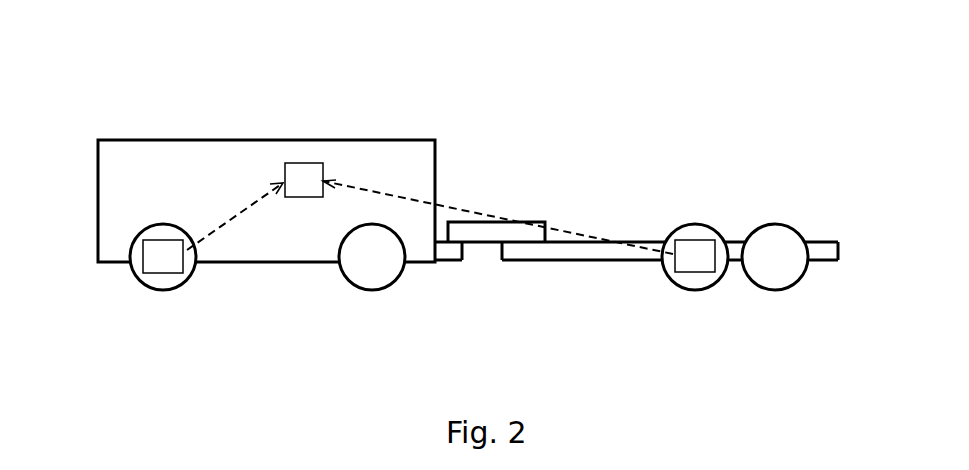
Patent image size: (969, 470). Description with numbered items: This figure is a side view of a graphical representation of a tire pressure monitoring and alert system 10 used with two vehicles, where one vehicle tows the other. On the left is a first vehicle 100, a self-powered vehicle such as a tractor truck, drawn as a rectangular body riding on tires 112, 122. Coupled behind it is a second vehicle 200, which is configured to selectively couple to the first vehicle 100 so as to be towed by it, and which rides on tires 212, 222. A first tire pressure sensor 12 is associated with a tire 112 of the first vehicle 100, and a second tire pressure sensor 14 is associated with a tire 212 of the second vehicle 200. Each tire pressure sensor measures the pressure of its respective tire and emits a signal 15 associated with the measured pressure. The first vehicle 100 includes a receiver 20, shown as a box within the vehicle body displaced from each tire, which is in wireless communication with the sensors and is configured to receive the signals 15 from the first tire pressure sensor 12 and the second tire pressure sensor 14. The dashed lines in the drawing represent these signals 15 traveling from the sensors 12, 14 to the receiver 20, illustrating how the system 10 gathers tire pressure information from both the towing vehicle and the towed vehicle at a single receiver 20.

The tire pressure monitoring and alert system 10 is at (176, 78).
The first vehicle 100 is at (295, 138).
The second vehicle 200 is at (752, 187).
The tire 112 is at (140, 282).
The tire 122 is at (347, 282).
The tire 212 is at (672, 280).
The tire 222 is at (752, 283).
The first tire pressure sensor 12 is at (163, 256).
The second tire pressure sensor 14 is at (695, 256).
The receiver 20 is at (304, 180).
The signal 15 is at (233, 213).